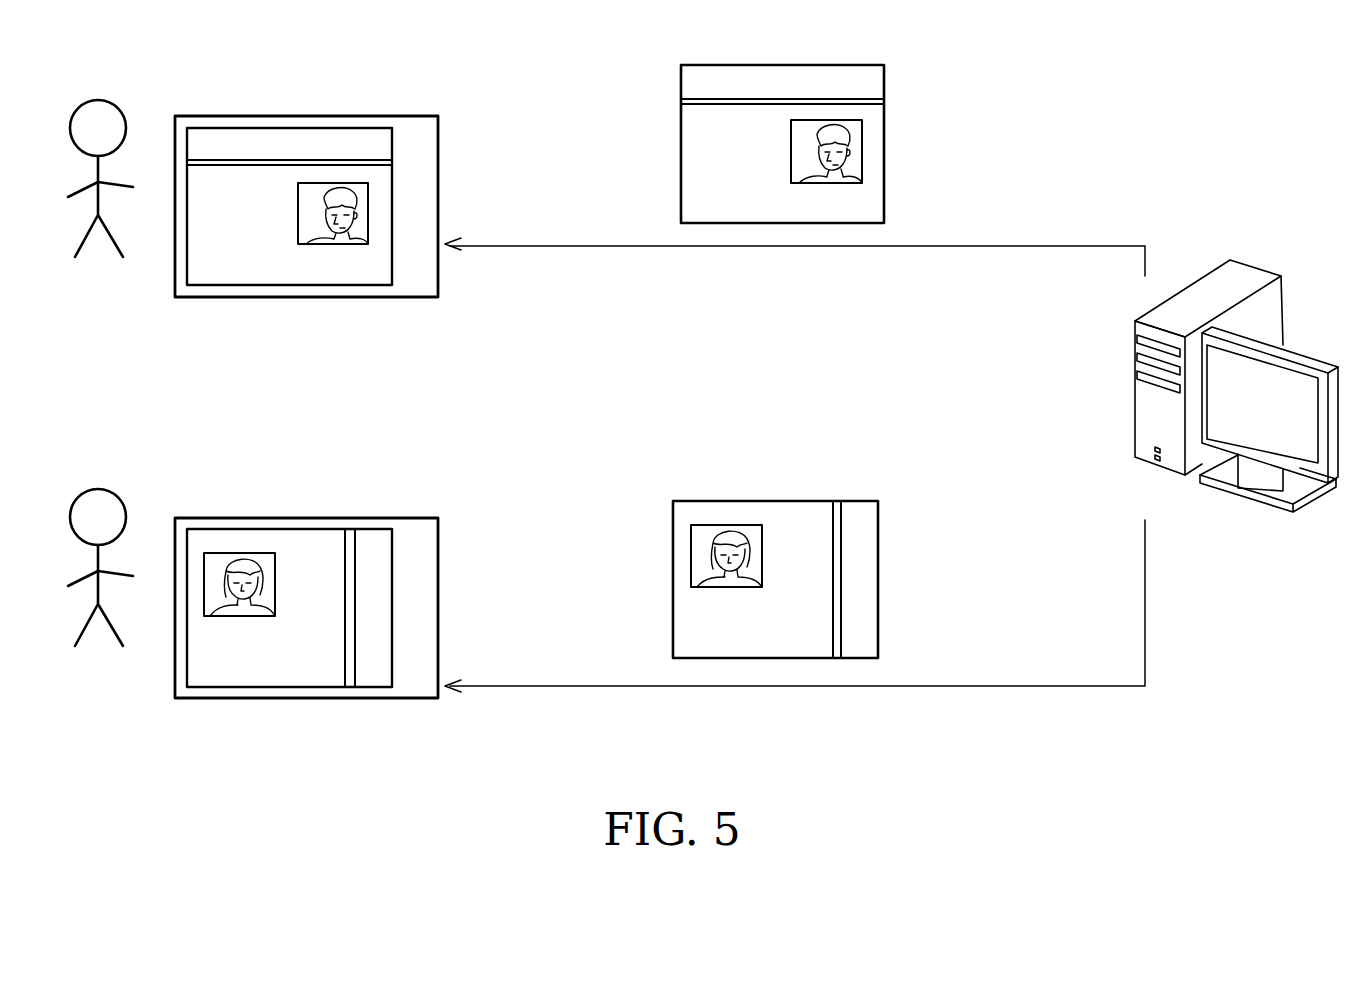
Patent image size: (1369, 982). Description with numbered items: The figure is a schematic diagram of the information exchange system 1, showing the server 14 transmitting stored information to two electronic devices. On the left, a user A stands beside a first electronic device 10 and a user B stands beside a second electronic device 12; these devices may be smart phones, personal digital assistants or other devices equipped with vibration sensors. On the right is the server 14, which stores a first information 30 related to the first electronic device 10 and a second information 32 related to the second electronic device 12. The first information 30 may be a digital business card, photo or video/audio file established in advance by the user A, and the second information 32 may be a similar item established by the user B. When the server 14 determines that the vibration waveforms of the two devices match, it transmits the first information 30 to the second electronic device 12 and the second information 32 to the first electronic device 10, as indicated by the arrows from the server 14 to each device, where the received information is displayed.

The information exchange system 1 is at (1160, 108).
The first electronic device 10 is at (300, 116).
The second electronic device 12 is at (300, 518).
The server 14 is at (1261, 266).
The first information 30 is at (878, 560).
The second information 32 is at (884, 127).
The user A is at (118, 108).
The user B is at (118, 497).